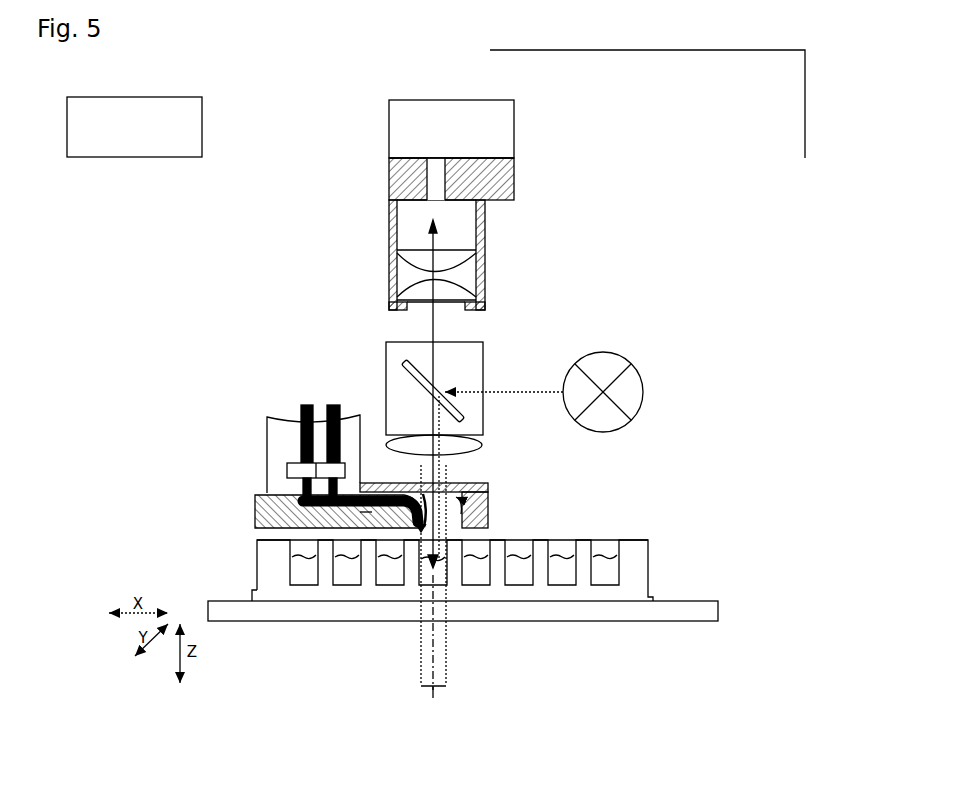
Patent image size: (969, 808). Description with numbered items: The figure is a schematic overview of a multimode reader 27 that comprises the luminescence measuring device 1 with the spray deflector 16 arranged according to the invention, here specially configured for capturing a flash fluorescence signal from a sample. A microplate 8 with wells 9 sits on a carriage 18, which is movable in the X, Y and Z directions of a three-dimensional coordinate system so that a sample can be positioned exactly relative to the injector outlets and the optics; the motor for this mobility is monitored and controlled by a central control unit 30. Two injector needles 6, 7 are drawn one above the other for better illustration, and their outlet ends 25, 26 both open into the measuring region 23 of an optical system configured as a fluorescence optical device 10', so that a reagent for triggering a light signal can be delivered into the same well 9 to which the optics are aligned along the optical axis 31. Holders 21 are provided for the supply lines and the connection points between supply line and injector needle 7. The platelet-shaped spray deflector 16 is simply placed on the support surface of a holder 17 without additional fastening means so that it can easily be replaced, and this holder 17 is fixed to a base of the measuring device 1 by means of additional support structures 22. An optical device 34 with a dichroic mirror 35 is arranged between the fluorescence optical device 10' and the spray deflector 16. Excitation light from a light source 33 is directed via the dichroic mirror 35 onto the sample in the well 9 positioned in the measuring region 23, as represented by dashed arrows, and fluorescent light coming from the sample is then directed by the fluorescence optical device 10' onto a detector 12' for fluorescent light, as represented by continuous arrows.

The luminescence measuring device 1 is at (594, 142).
The injector needle 6 is at (367, 516).
The injector needle 7 is at (300, 497).
The microplate 8 is at (659, 574).
The well 9 is at (612, 532).
The fluorescence optical device 10' is at (404, 234).
The detector for fluorescent light 12' is at (451, 129).
The spray deflector 16 is at (488, 510).
The holder 17 is at (490, 488).
The carriage 18 is at (238, 608).
The holder 21 is at (330, 467).
The support structure 22 is at (262, 513).
The measuring region 23 is at (433, 709).
The outlet end 25 is at (422, 524).
The outlet end 26 is at (417, 527).
The multimode reader 27 is at (758, 91).
The central control unit 30 is at (119, 142).
The optical axis 31 is at (434, 646).
The light source 33 is at (622, 357).
The optical device 34 is at (451, 371).
The dichroic mirror 35 is at (405, 364).